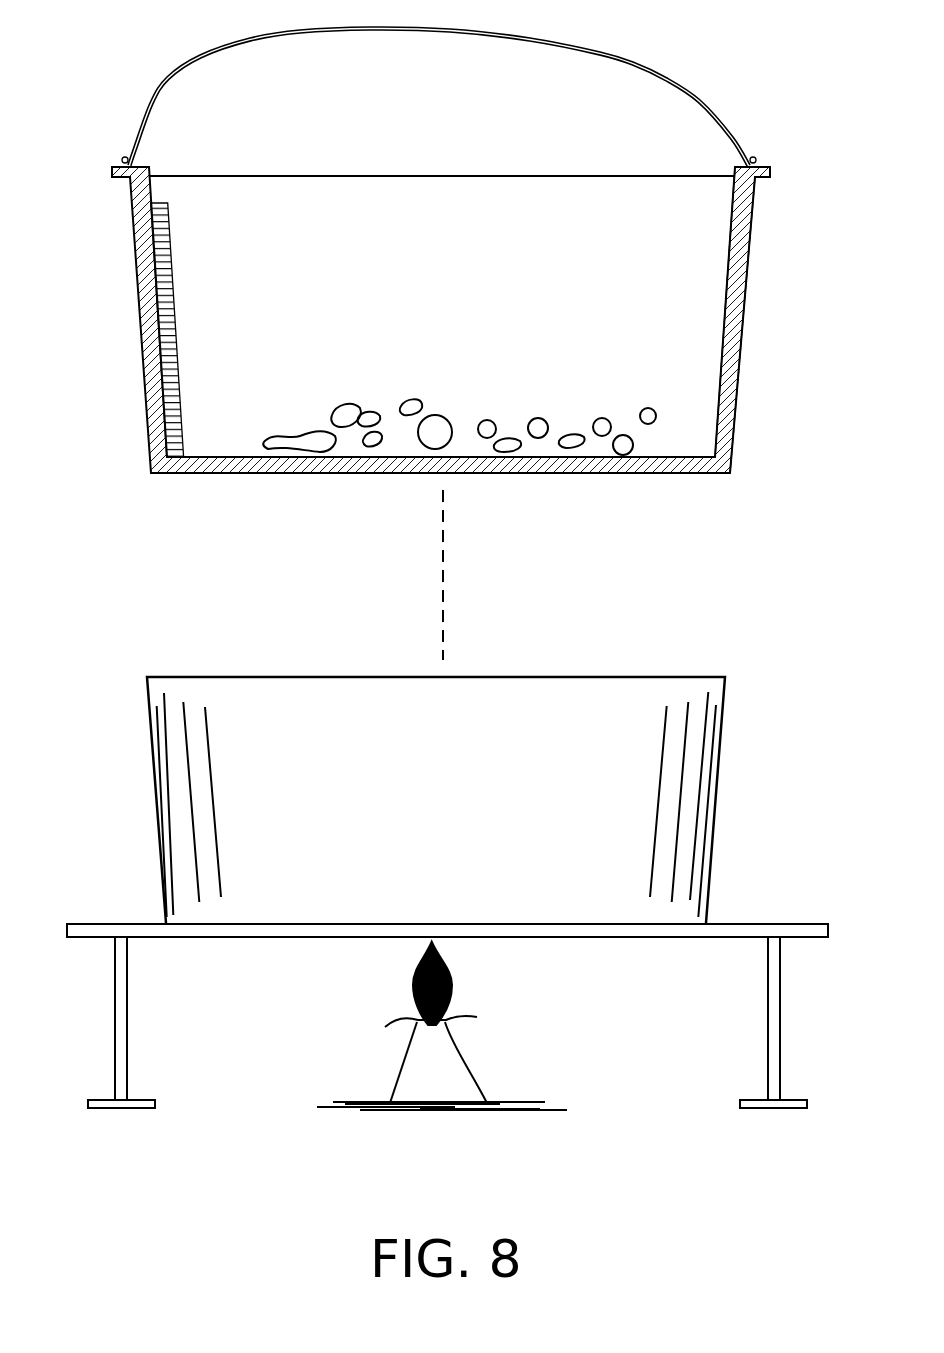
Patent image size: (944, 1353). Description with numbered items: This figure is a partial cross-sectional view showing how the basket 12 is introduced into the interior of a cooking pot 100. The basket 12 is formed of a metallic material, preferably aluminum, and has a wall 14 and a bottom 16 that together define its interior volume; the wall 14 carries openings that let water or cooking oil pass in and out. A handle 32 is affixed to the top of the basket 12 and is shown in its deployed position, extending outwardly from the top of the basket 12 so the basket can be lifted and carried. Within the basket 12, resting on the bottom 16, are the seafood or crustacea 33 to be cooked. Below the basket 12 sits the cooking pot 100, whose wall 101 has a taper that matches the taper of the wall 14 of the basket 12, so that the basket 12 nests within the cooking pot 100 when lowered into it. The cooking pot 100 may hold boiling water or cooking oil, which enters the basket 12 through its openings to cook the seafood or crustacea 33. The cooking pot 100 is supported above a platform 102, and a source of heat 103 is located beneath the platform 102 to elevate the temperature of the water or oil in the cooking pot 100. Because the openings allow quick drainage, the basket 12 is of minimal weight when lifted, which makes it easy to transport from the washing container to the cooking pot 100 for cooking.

The basket 12 is at (472, 348).
The wall 14 is at (750, 268).
The bottom 16 is at (640, 472).
The handle 32 is at (707, 98).
The seafood or crustacea 33 is at (448, 416).
The cooking pot 100 is at (479, 800).
The wall 101 is at (722, 733).
The platform 102 is at (743, 923).
The source of heat 103 is at (462, 1055).